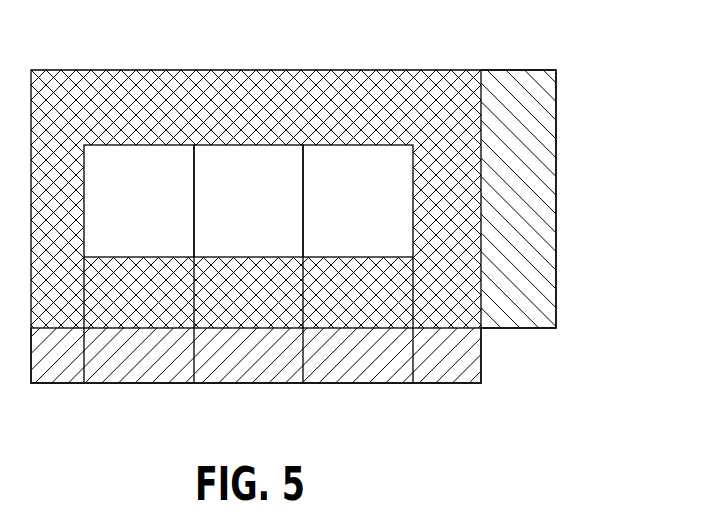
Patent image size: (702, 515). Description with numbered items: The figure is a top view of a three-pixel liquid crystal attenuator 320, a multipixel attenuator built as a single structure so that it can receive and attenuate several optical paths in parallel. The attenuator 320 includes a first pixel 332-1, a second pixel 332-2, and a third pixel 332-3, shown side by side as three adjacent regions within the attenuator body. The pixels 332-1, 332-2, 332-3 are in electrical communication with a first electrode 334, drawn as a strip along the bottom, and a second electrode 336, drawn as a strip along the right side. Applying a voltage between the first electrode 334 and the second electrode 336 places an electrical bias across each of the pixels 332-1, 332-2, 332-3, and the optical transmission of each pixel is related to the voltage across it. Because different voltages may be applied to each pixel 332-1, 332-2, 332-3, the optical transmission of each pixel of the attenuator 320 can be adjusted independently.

The three-pixel liquid crystal attenuator 320 is at (354, 196).
The first pixel 332-1 is at (108, 210).
The second pixel 332-2 is at (280, 210).
The third pixel 332-3 is at (327, 210).
The first electrode 334 is at (482, 355).
The second electrode 336 is at (556, 194).